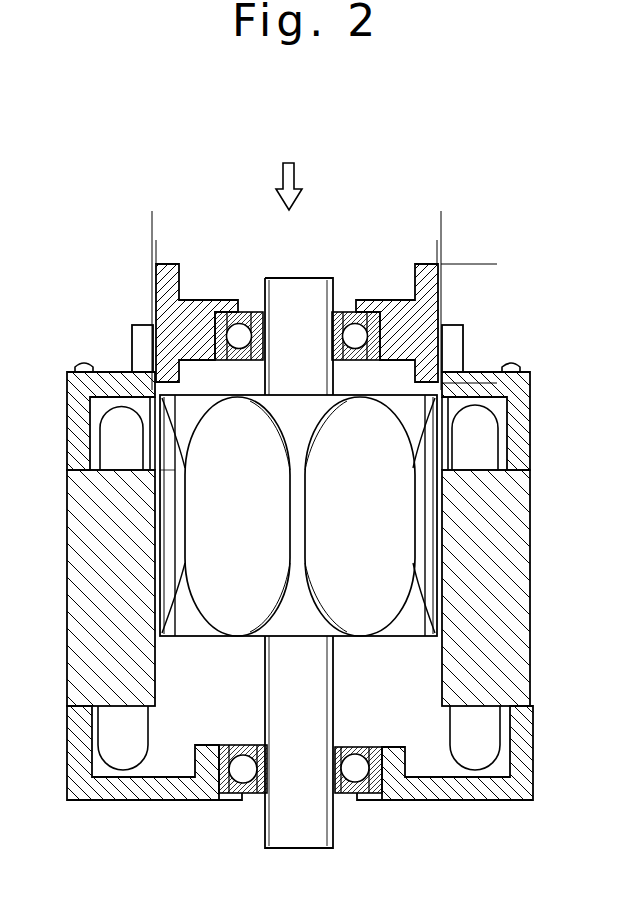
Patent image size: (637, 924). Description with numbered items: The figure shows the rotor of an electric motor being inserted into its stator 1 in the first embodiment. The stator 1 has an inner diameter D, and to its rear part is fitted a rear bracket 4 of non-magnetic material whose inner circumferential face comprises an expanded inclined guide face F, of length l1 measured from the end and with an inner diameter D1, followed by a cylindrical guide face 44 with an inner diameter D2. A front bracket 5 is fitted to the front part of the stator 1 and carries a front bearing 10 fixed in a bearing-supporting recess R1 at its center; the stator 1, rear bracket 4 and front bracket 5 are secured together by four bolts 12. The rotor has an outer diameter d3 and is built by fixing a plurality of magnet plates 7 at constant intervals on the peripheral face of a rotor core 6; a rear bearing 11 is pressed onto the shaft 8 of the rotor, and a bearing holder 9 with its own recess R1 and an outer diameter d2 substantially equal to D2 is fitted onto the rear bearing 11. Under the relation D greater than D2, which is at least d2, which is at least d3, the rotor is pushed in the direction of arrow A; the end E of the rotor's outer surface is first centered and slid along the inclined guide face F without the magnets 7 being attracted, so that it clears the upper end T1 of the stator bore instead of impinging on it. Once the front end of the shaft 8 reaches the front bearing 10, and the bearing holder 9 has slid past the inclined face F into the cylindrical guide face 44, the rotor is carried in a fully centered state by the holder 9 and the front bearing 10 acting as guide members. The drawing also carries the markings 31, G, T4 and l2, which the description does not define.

The stator 1 is at (66, 540).
The rear bracket 4 is at (56, 389).
The front bracket 5 is at (92, 806).
The rotor core 6 is at (397, 637).
The magnet plates 7 is at (405, 484).
The shaft 8 is at (265, 838).
The bearing holder 9 is at (384, 362).
The front bearing 10 is at (373, 796).
The rear bearing 11 is at (339, 310).
The bolts 12 is at (84, 365).
The stator coil 31 is at (105, 437).
The cylindrical guide face 44 is at (163, 437).
The insertion direction arrow A is at (289, 174).
The inner diameter of stator D is at (435, 548).
The inner diameter of inclined guide face end D1 is at (152, 218).
The inner diameter of cylindrical guide face D2 is at (437, 388).
The outer diameter of bearing holder d2 is at (437, 247).
The outer diameter of rotor d3 is at (435, 523).
The end of outer face of rotor E is at (163, 641).
The inclined guide face F is at (435, 327).
The air gap G is at (188, 612).
The bearing-supporting recess R1 is at (226, 322).
The upper end of inner face of stator T1 is at (163, 471).
The cap thickness T4 is at (157, 337).
The length of inclined guide face l1 is at (448, 362).
The cap height l2 is at (489, 264).